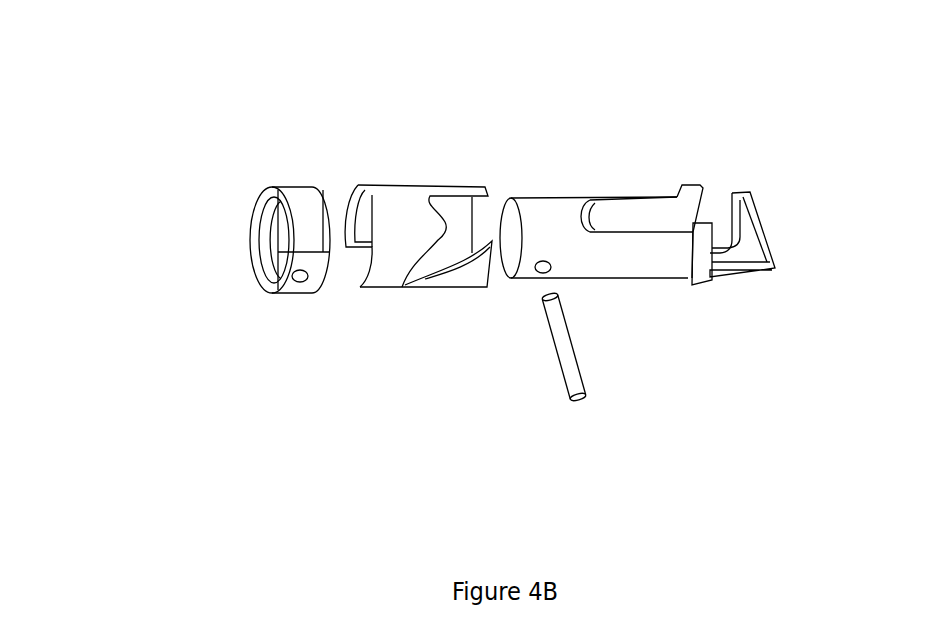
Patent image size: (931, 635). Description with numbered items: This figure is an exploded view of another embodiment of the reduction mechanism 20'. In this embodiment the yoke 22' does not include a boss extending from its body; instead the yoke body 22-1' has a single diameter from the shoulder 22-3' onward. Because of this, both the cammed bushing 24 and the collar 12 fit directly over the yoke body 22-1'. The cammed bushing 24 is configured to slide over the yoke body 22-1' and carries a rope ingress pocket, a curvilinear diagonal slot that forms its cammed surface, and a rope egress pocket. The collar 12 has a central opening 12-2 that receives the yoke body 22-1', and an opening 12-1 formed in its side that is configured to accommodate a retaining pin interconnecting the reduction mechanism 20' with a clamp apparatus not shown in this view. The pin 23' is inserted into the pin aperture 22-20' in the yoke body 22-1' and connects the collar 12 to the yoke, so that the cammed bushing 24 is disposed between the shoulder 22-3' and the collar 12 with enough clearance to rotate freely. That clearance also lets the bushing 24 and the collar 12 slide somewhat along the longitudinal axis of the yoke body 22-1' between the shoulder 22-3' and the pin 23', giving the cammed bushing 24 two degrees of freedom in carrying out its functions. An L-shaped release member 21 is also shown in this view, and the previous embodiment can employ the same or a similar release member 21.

The reduction mechanism 20' is at (415, 225).
The collar portion 12 is at (282, 170).
The opening 12-1 is at (298, 283).
The central opening 12-2 is at (262, 258).
The cammed bushing 24 is at (424, 164).
The yoke 22' is at (607, 211).
The yoke body 22-1' is at (637, 278).
The pin aperture 22-20' is at (504, 315).
The shoulder 22-3' is at (717, 302).
The L-shaped release member 21 is at (750, 213).
The pin 23' is at (592, 363).